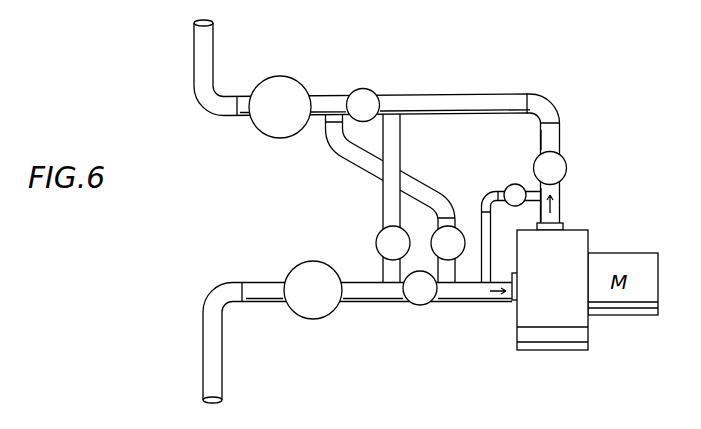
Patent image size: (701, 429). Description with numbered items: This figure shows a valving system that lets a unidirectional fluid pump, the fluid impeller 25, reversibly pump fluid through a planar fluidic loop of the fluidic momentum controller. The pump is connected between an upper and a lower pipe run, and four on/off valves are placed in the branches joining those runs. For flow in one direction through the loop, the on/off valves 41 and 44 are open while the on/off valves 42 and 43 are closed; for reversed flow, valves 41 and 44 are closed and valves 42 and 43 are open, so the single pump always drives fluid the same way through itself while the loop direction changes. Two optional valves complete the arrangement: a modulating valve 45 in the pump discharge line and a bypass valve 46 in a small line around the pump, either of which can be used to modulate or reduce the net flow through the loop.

The fluid impeller 25 is at (578, 351).
The on/off valve 41 is at (359, 89).
The on/off valve 42 is at (458, 228).
The on/off valve 43 is at (377, 242).
The on/off valve 44 is at (421, 306).
The modulating valve 45 is at (567, 168).
The bypass valve 46 is at (514, 183).